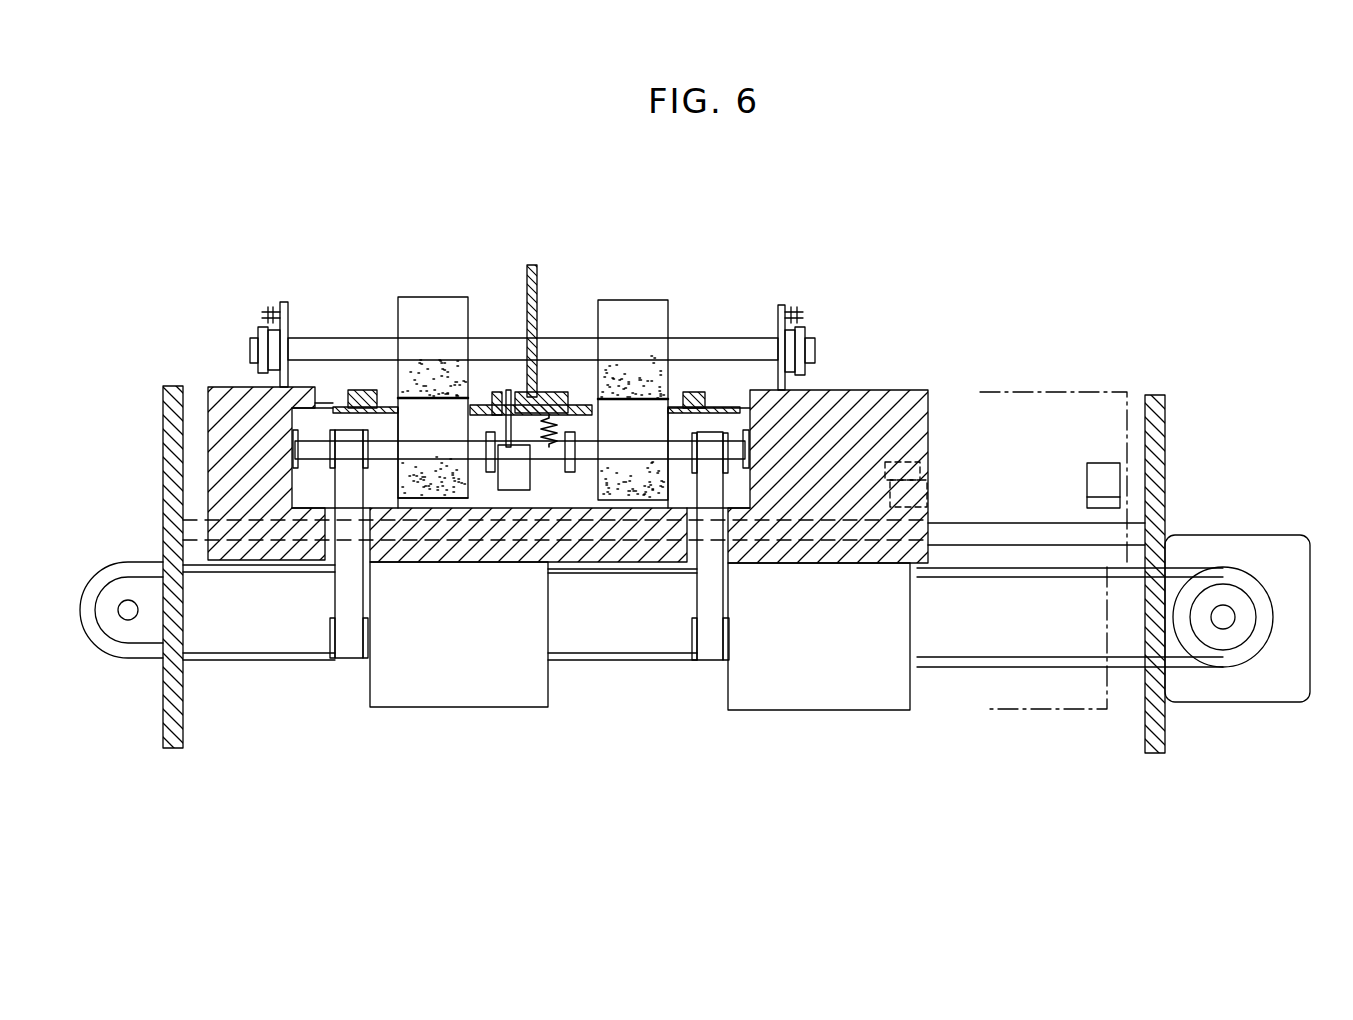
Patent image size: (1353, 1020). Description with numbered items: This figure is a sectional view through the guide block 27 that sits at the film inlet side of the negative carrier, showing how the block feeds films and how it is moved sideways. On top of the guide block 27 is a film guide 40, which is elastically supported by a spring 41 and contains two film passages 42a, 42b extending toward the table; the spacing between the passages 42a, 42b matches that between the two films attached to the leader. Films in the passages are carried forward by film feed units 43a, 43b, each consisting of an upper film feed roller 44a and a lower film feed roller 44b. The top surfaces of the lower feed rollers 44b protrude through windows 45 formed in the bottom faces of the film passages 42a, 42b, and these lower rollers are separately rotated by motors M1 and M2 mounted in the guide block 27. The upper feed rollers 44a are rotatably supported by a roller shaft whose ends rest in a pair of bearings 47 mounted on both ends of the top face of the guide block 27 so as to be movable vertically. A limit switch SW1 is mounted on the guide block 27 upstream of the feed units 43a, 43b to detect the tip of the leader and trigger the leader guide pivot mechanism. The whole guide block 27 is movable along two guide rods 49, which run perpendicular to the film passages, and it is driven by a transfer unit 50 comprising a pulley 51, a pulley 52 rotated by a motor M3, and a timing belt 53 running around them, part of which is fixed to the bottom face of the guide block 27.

The guide block 27 is at (222, 385).
The film guide 40 is at (553, 392).
The spring 41 is at (548, 448).
The film passage 42a is at (684, 398).
The film passage 42b is at (378, 395).
The film feed unit 43a is at (617, 300).
The film feed unit 43b is at (449, 298).
The upper film feed roller 44a is at (420, 310).
The lower film feed roller 44b is at (442, 490).
The window 45 is at (420, 492).
The bearing 47 is at (285, 300).
The guide rod 49 is at (992, 535).
The transfer unit 50 is at (1218, 528).
The pulley 51 is at (116, 562).
The pulley 52 is at (1242, 655).
The timing belt 53 is at (1020, 665).
The motor M1 is at (797, 694).
The motor M2 is at (427, 699).
The motor M3 is at (1262, 565).
The limit switch SW1 is at (500, 492).